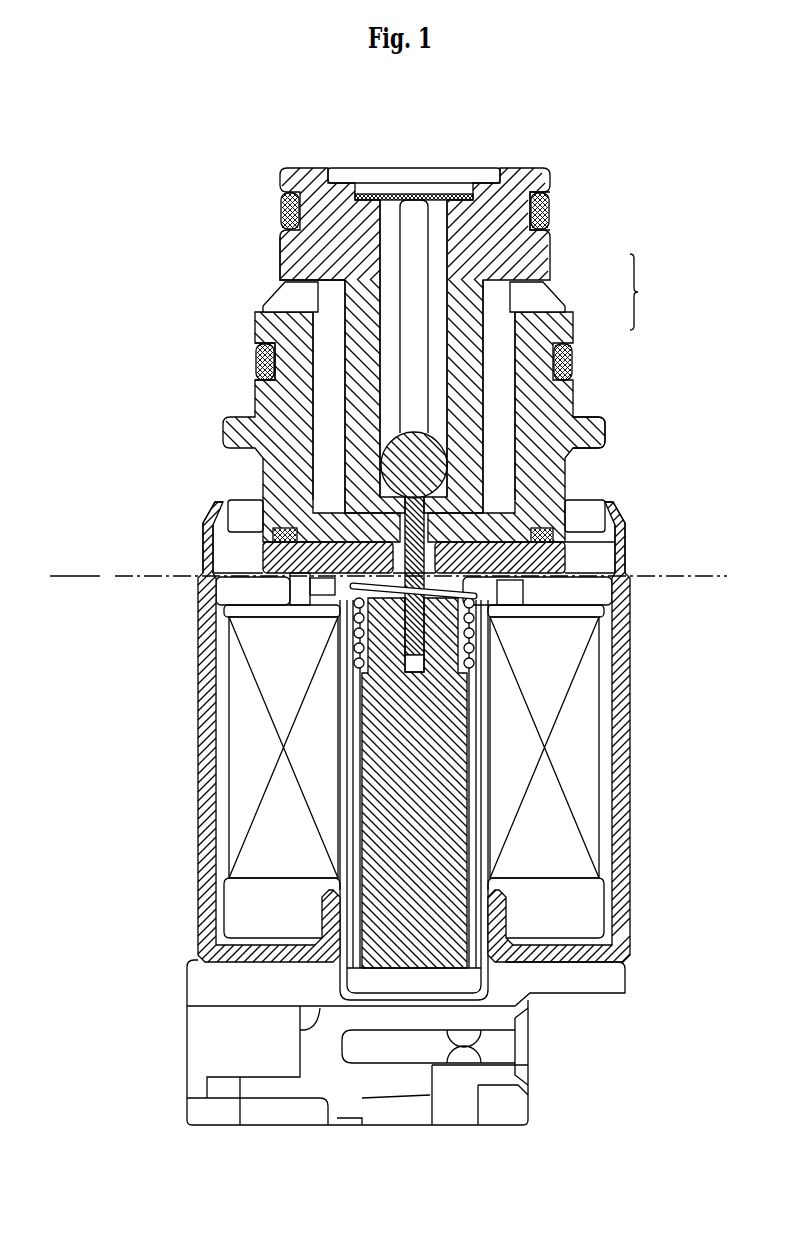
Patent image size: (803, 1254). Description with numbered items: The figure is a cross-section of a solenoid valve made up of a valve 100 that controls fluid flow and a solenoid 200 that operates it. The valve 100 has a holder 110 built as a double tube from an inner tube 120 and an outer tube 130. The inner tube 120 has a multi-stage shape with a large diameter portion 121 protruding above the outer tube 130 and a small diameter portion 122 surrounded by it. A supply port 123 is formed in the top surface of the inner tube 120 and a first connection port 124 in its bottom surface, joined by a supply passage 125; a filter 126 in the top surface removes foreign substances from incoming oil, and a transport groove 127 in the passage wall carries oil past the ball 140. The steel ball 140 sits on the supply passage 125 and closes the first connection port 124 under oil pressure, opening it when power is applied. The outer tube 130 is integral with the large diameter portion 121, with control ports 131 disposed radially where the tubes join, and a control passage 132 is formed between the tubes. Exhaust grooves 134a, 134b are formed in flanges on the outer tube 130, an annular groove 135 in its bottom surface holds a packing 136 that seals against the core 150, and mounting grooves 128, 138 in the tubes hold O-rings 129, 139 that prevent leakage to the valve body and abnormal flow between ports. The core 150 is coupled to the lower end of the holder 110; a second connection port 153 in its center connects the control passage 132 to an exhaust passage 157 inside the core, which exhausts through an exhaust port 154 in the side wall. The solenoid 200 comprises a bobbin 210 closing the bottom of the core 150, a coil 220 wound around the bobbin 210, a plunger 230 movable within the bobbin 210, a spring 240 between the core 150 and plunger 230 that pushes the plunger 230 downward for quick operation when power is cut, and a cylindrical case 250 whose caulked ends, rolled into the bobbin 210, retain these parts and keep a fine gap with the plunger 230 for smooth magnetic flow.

The valve 100 is at (389, 564).
The solenoid 200 is at (75, 589).
The holder 110 is at (652, 292).
The inner tube 120 is at (545, 257).
The large diameter portion 121 is at (290, 240).
The small diameter portion 122 is at (360, 398).
The supply port 123 is at (452, 178).
The first connection port 124 is at (310, 507).
The supply passage 125 is at (435, 426).
The filter 126 is at (392, 194).
The transport groove 127 is at (412, 265).
The mounting groove 128 is at (550, 196).
The O-ring 129 is at (549, 211).
The outer tube 130 is at (555, 330).
The control port 131 is at (283, 304).
The control passage 132 is at (500, 395).
The exhaust groove 134a is at (591, 445).
The exhaust groove 134b is at (590, 508).
The annular groove 135 is at (290, 522).
The packing 136 is at (280, 556).
The mounting groove 138 is at (262, 347).
The O-ring 139 is at (262, 370).
The ball 140 is at (400, 462).
The core 150 is at (620, 540).
The second connection port 153 is at (300, 583).
The exhaust port 154 is at (590, 560).
The exhaust passage 157 is at (565, 592).
The bobbin 210 is at (495, 753).
The coil 220 is at (588, 683).
The plunger 230 is at (395, 778).
The spring 240 is at (357, 658).
The case 250 is at (200, 835).